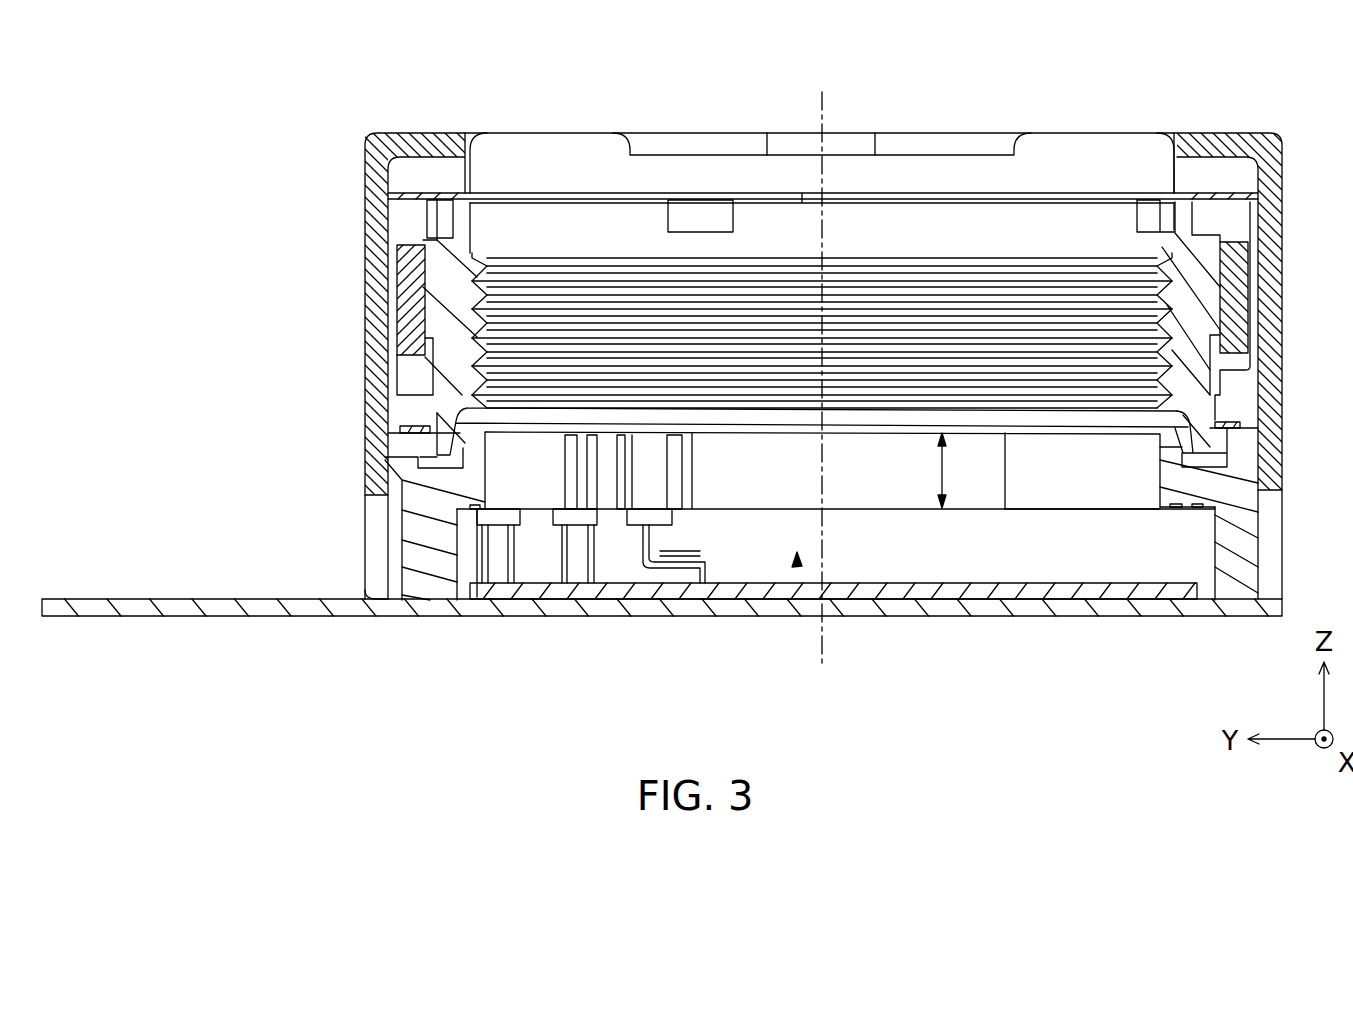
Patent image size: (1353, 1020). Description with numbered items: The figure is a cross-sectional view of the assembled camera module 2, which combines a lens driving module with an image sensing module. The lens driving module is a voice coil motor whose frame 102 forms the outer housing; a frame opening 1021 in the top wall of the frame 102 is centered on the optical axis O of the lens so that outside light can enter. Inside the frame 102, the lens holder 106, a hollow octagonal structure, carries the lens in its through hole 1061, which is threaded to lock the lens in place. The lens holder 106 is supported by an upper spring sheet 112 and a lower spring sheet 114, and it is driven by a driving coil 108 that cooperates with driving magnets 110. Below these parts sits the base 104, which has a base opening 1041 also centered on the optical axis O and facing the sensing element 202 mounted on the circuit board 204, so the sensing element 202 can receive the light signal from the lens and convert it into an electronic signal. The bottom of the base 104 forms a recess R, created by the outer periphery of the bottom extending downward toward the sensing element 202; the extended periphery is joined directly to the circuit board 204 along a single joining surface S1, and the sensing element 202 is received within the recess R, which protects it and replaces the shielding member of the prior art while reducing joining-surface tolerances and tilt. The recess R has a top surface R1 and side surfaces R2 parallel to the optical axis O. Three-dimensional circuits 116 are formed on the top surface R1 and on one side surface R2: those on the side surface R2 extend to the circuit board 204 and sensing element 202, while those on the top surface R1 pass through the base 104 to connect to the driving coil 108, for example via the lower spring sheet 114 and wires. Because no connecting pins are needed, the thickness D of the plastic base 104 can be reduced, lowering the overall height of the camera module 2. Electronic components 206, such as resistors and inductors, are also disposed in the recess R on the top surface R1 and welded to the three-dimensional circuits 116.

The camera module 2 is at (163, 92).
The frame 102 is at (375, 375).
The frame opening 1021 is at (700, 175).
The base 104 is at (1237, 550).
The base opening 1041 is at (1080, 470).
The lens holder 106 is at (447, 272).
The through hole 1061 is at (942, 233).
The driving coil 108 is at (410, 323).
The driving magnet 110 is at (407, 220).
The upper spring sheet 112 is at (540, 195).
The lower spring sheet 114 is at (405, 428).
The three-dimensional circuit 116 is at (692, 458).
The sensing element 202 is at (868, 588).
The circuit board 204 is at (300, 603).
The electronic component 206 is at (500, 520).
The optical axis O is at (821, 365).
The thickness D is at (953, 470).
The recess R is at (797, 556).
The top surface R1 is at (1007, 510).
The side surface R2 is at (472, 532).
The joining surface S1 is at (378, 598).